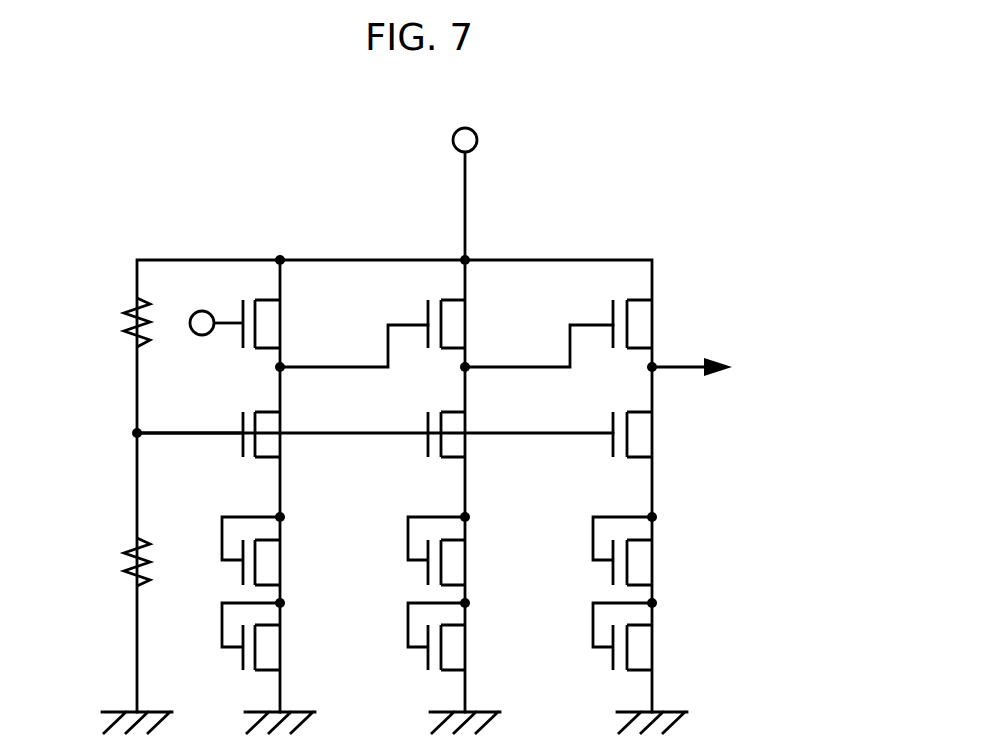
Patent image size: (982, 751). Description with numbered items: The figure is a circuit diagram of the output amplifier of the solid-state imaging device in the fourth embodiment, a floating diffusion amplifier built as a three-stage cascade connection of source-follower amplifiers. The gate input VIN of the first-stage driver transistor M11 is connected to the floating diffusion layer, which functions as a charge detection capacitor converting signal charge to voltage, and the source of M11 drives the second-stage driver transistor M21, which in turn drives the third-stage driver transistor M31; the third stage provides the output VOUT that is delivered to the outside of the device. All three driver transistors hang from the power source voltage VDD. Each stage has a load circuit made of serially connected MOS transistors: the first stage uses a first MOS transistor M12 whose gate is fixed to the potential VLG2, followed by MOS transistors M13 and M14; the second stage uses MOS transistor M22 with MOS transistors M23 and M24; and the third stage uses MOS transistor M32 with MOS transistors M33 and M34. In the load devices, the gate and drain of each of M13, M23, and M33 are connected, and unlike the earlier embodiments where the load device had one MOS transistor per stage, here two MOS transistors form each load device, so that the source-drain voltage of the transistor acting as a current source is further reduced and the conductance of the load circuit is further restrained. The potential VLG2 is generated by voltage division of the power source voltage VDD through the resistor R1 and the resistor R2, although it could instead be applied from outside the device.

The power source voltage VDD is at (501, 134).
The gate input VIN is at (206, 306).
The output VOUT is at (735, 368).
The potential VLG2 is at (140, 433).
The resistor R1 is at (111, 322).
The resistor R2 is at (111, 562).
The first-stage driver transistor M11 is at (296, 322).
The first MOS transistor M12 is at (296, 424).
The MOS transistor M13 is at (286, 551).
The MOS transistor M14 is at (286, 636).
The driver transistor M21 is at (481, 322).
The MOS transistor M22 is at (481, 424).
The MOS transistor M23 is at (471, 551).
The MOS transistor M24 is at (471, 636).
The driver transistor M31 is at (668, 322).
The MOS transistor M32 is at (668, 426).
The MOS transistor M33 is at (658, 551).
The MOS transistor M34 is at (658, 636).